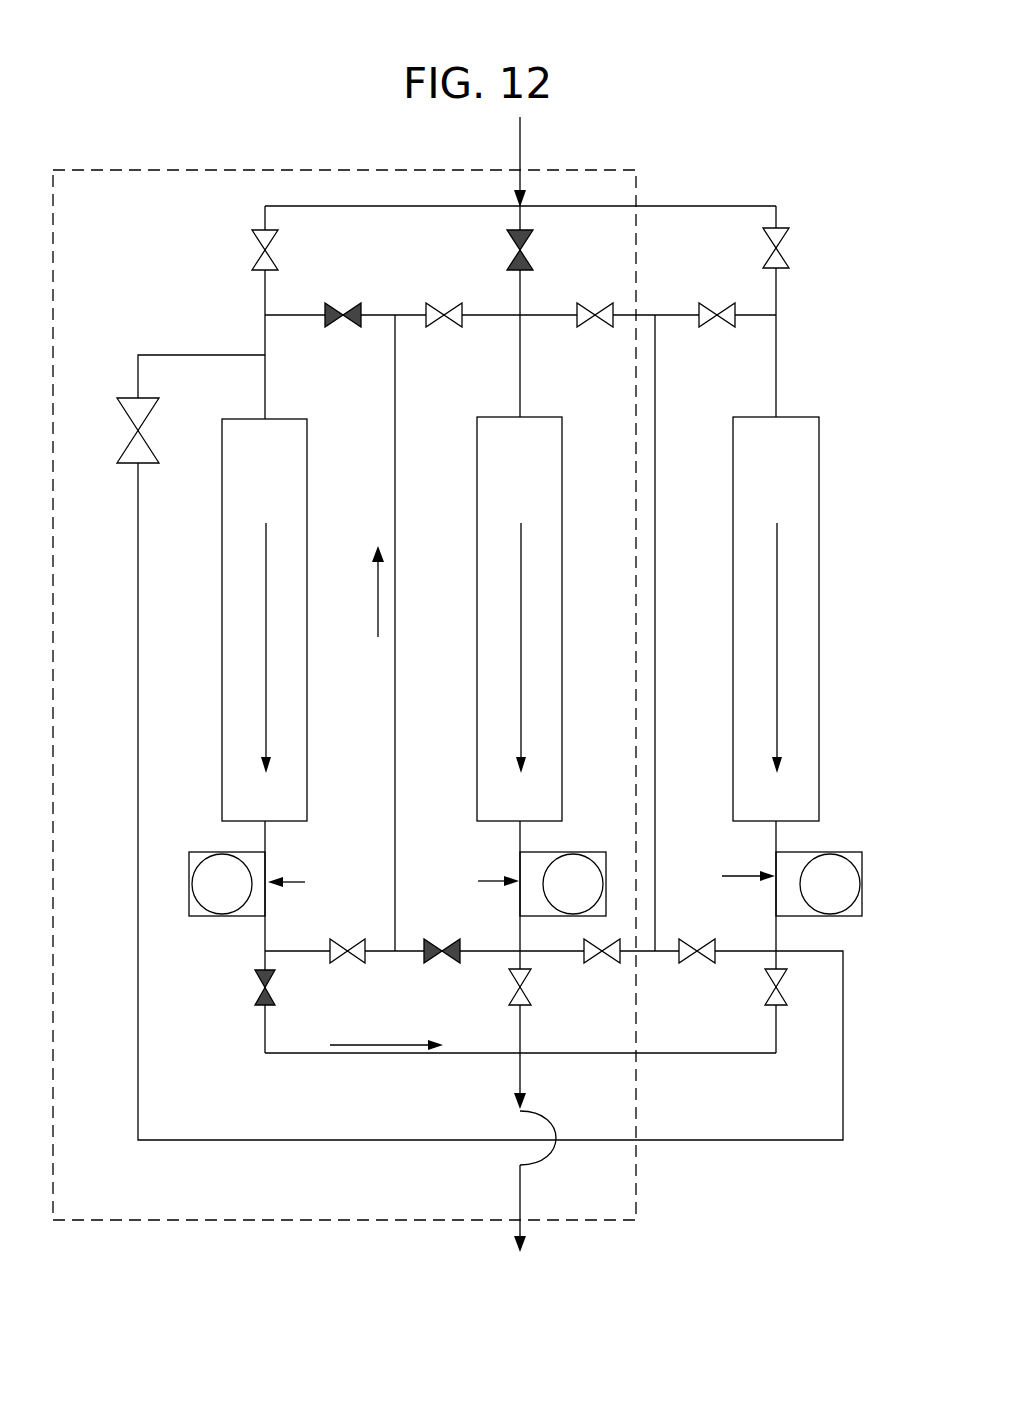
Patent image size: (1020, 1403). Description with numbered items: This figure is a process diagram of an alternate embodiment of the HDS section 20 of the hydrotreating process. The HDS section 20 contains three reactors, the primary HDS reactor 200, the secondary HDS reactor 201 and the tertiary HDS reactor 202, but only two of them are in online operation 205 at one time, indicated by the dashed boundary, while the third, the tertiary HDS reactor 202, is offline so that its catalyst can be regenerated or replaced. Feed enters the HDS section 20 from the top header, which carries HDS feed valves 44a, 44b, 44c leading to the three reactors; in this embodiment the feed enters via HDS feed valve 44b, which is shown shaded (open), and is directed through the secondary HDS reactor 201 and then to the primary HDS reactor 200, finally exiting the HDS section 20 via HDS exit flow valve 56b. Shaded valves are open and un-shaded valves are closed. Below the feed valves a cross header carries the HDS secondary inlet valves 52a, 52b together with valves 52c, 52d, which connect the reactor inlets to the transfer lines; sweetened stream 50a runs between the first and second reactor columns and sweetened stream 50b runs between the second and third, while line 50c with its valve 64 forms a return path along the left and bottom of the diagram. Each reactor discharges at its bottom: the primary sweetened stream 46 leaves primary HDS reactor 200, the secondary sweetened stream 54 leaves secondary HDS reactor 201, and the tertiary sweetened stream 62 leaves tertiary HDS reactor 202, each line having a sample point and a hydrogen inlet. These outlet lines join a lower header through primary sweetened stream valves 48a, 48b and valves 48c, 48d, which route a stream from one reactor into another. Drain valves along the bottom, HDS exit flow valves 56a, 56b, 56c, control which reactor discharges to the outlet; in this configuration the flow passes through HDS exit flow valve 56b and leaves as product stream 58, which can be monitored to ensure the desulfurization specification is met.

The HDS section 20 is at (800, 160).
The online operation 205 is at (184, 168).
The HDS feed valve 44a is at (262, 252).
The HDS feed valve 44b is at (514, 250).
The HDS feed valve 44c is at (774, 250).
The HDS secondary inlet valve 52a is at (434, 302).
The HDS secondary inlet valve 52b is at (325, 302).
The cross-over valve 52c is at (726, 302).
The cross-over valve 52d is at (586, 302).
The valve 64 is at (148, 418).
The primary HDS reactor 200 is at (264, 620).
The secondary HDS reactor 201 is at (519, 619).
The tertiary HDS reactor 202 is at (776, 619).
The sweetened stream 50a is at (396, 614).
The sweetened stream 50b is at (656, 604).
The recycle line 50c is at (139, 599).
The primary sweetened stream 46 is at (268, 841).
The secondary sweetened stream 54 is at (520, 847).
The tertiary sweetened stream 62 is at (776, 857).
The primary sweetened stream valve 48a is at (356, 946).
The primary sweetened stream valve 48b is at (429, 940).
The outlet header valve 48c is at (618, 962).
The outlet header valve 48d is at (691, 947).
The HDS exit flow valve 56a is at (513, 995).
The HDS exit flow valve 56b is at (258, 978).
The HDS exit flow valve 56c is at (770, 993).
The product stream 58 is at (522, 1174).